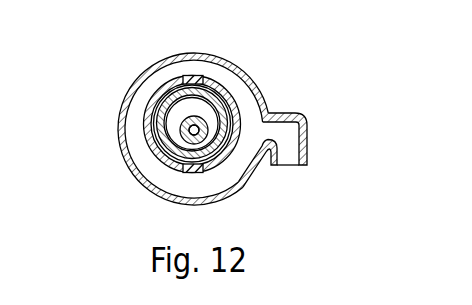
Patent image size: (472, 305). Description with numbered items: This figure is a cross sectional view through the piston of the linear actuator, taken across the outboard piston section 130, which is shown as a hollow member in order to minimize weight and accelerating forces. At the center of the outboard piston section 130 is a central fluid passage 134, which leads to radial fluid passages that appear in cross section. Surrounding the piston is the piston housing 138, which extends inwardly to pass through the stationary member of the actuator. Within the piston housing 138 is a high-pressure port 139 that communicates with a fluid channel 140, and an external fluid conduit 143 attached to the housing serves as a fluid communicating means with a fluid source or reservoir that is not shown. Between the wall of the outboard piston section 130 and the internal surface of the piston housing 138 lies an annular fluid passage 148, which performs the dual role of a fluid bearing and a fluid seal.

The outboard piston section 130 is at (162, 168).
The central fluid passage 134 is at (208, 133).
The piston housing 138 is at (150, 117).
The high-pressure port 139 is at (201, 82).
The fluid channel 140 is at (197, 72).
The external fluid conduit 143 is at (291, 144).
The annular fluid passage 148 is at (192, 131).